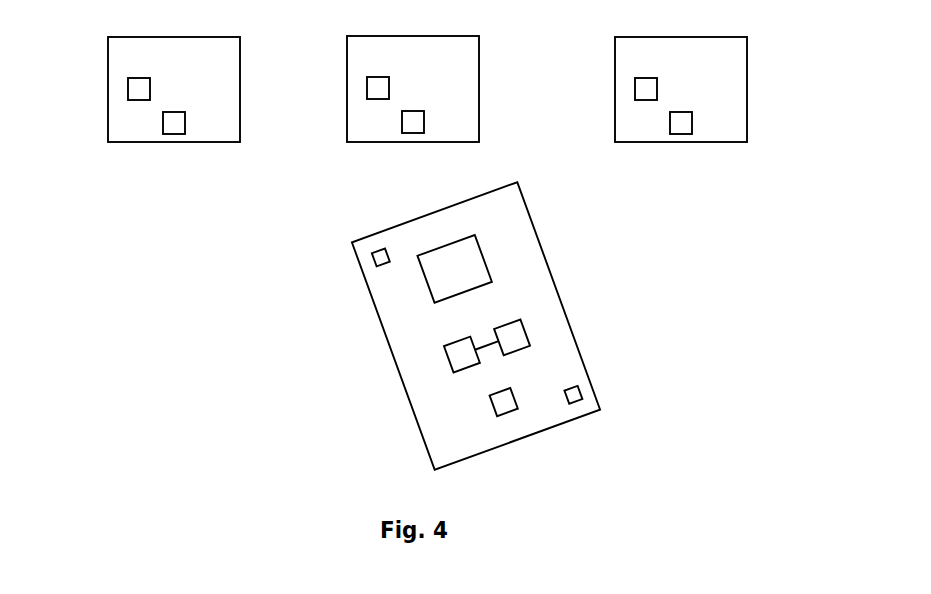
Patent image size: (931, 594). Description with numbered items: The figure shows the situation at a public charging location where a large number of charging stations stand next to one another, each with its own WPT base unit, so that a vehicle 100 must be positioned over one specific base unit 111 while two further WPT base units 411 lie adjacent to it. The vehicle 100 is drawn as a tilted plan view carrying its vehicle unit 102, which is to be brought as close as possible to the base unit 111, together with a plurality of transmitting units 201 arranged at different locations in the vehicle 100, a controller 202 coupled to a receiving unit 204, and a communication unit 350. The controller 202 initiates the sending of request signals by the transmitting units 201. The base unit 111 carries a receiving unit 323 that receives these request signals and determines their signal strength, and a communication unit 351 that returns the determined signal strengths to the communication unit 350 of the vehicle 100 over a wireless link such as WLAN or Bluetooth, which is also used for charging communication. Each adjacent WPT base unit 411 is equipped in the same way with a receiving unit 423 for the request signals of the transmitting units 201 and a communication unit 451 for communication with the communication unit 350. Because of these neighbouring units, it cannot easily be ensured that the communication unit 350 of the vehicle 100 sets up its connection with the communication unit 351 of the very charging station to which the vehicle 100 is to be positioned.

The vehicle 100 is at (548, 266).
The vehicle unit 102 is at (430, 282).
The base unit 111 is at (479, 102).
The transmitting unit 201 is at (375, 262).
The controller 202 is at (527, 332).
The receiving unit 204 is at (445, 357).
The receiving unit 323 is at (377, 88).
The communication unit 350 is at (502, 413).
The communication unit 351 is at (416, 126).
The WPT base unit 411 is at (240, 102).
The receiving unit 423 is at (138, 88).
The communication unit 451 is at (177, 127).